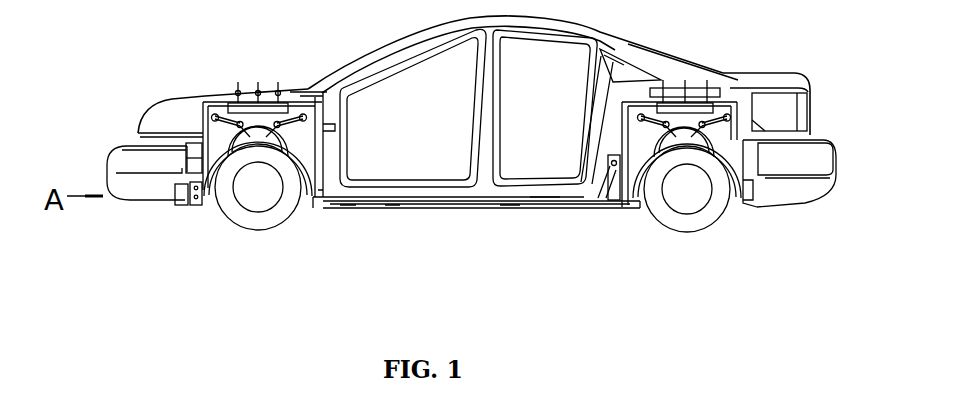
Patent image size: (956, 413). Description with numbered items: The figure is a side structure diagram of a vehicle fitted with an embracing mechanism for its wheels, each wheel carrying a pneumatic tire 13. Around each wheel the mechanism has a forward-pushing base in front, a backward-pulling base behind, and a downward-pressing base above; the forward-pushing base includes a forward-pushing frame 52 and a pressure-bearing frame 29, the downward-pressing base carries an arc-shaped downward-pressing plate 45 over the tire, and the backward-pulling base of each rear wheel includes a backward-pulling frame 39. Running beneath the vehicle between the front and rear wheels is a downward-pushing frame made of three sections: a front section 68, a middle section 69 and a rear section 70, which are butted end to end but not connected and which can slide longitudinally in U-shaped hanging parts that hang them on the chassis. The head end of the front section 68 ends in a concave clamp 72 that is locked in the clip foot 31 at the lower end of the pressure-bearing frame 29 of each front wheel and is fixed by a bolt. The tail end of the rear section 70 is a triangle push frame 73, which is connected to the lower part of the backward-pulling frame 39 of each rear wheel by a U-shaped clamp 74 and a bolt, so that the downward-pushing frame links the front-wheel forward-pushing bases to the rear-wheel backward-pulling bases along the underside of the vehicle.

The pneumatic tire 13 is at (125, 163).
The pressure-bearing frame 29 is at (192, 167).
The forward-pushing frame 52 is at (199, 138).
The arc-shaped downward-pressing plate 45 is at (257, 128).
The backward-pulling frame 39 is at (314, 157).
The clip foot 31 is at (180, 200).
The concave clamp 72 is at (197, 203).
The front section of downward-pushing frame 68 is at (332, 200).
The middle section of downward-pushing frame 69 is at (425, 200).
The rear section of downward-pushing frame 70 is at (540, 200).
The triangle push frame 73 is at (598, 180).
The U-shaped clamp 74 is at (618, 170).